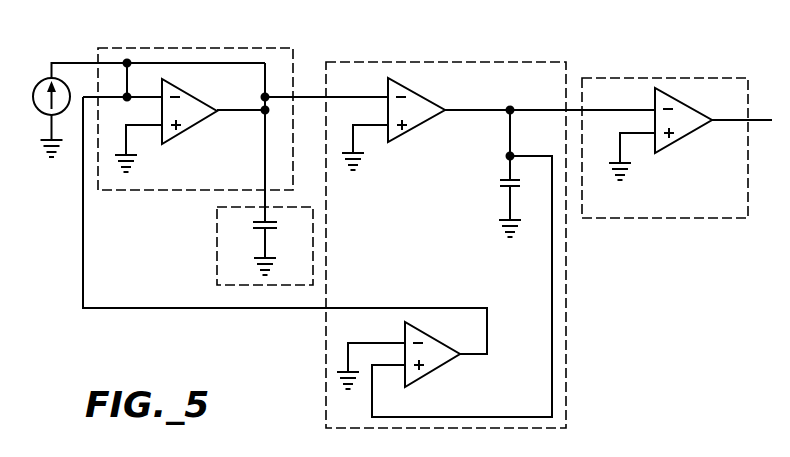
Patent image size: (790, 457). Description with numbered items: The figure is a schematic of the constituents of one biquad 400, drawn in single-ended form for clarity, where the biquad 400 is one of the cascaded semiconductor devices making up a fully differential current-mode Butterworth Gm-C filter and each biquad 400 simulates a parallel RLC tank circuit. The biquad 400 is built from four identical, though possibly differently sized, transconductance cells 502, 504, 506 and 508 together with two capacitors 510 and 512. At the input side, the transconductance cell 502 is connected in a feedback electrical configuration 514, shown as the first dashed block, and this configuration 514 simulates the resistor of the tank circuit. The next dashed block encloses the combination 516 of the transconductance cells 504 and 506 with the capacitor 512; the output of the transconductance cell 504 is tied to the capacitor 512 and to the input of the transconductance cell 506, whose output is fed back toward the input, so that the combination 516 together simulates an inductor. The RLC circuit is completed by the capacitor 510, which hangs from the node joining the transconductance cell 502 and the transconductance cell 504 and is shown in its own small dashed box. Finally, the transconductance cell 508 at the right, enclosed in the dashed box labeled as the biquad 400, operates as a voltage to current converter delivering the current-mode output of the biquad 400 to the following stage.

The biquad 400 is at (636, 42).
The transconductance cell 502 is at (185, 118).
The transconductance cell 504 is at (410, 118).
The transconductance cell 506 is at (427, 363).
The transconductance cell 508 is at (677, 127).
The capacitor 510 is at (248, 234).
The capacitor 512 is at (485, 189).
The feedback electrical configuration 514 is at (168, 48).
The combination 516 is at (456, 62).